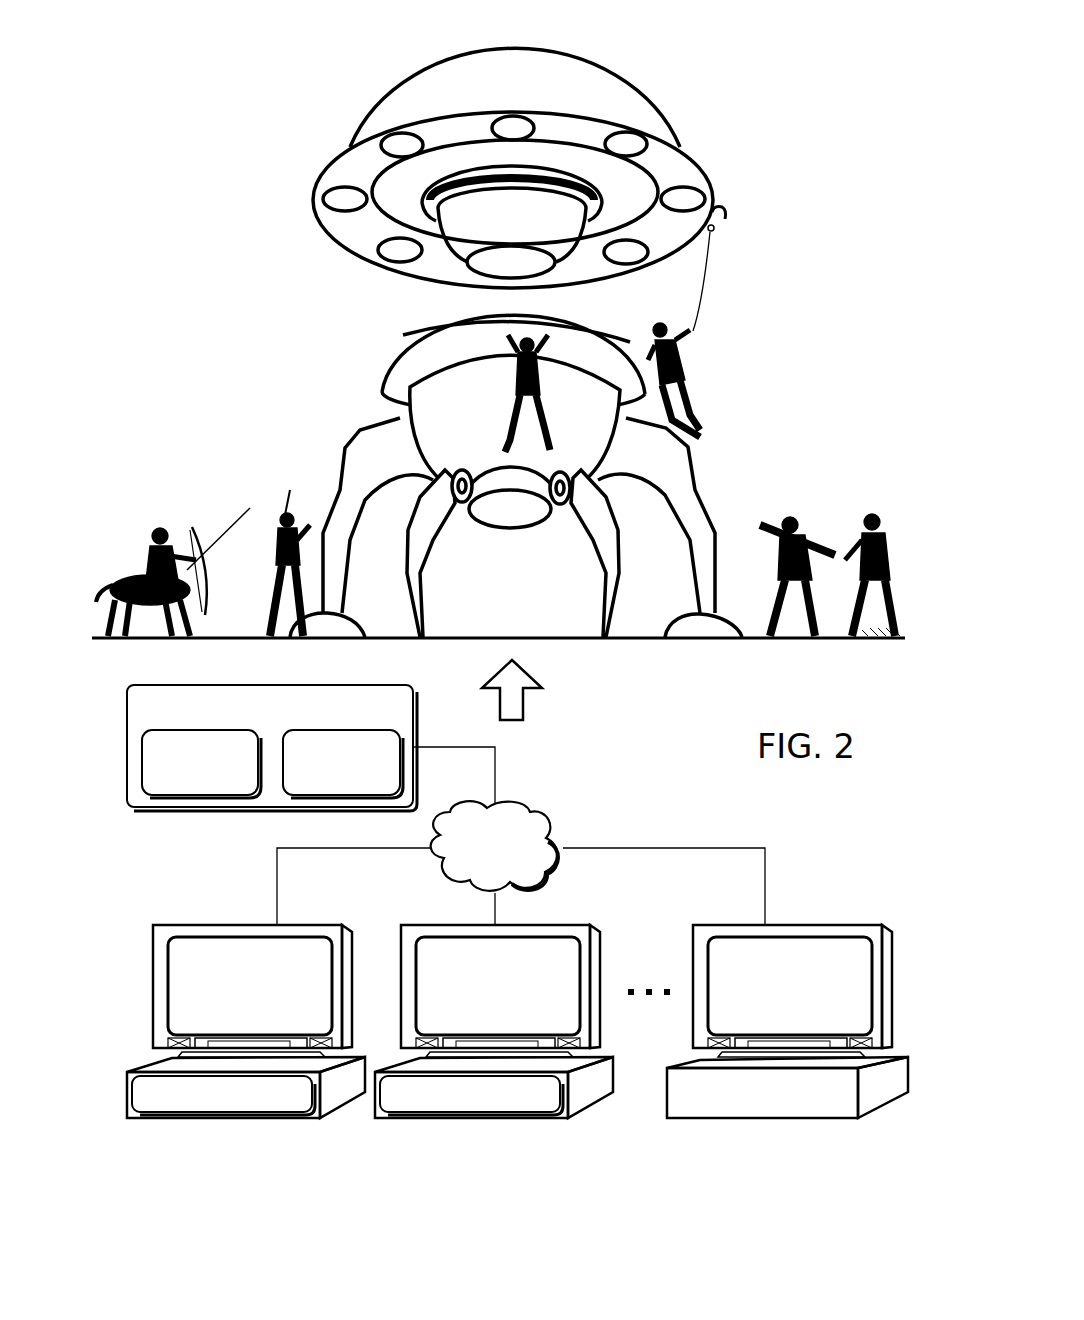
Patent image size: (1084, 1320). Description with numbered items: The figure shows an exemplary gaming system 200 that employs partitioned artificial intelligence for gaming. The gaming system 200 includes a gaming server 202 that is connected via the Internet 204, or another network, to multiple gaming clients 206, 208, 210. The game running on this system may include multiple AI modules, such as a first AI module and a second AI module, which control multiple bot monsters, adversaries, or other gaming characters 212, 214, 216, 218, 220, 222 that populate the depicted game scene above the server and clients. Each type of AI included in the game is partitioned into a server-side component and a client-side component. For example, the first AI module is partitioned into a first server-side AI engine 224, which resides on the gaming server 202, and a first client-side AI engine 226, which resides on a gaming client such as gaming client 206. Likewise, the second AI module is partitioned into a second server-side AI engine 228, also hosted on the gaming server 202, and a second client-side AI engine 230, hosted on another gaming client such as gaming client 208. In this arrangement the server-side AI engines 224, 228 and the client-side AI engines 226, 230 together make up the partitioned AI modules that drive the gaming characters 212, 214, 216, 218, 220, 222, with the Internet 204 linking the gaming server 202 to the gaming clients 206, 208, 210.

The gaming system 200 is at (586, 704).
The gaming server 202 is at (373, 717).
The Internet 204 is at (511, 871).
The gaming client 206 is at (310, 1149).
The gaming client 208 is at (557, 1149).
The gaming client 210 is at (855, 1149).
The gaming character 212 is at (150, 560).
The gaming character 214 is at (284, 512).
The gaming character 216 is at (512, 417).
The gaming character 218 is at (681, 372).
The gaming character 220 is at (788, 523).
The gaming character 222 is at (870, 522).
The server-side AI engine SRV-AI 1 224 is at (218, 787).
The client-side AI engine Client-AI 1 226 is at (302, 1106).
The server-side AI engine SRV-AI 2 228 is at (357, 787).
The client-side AI engine Client-AI 2 230 is at (551, 1106).